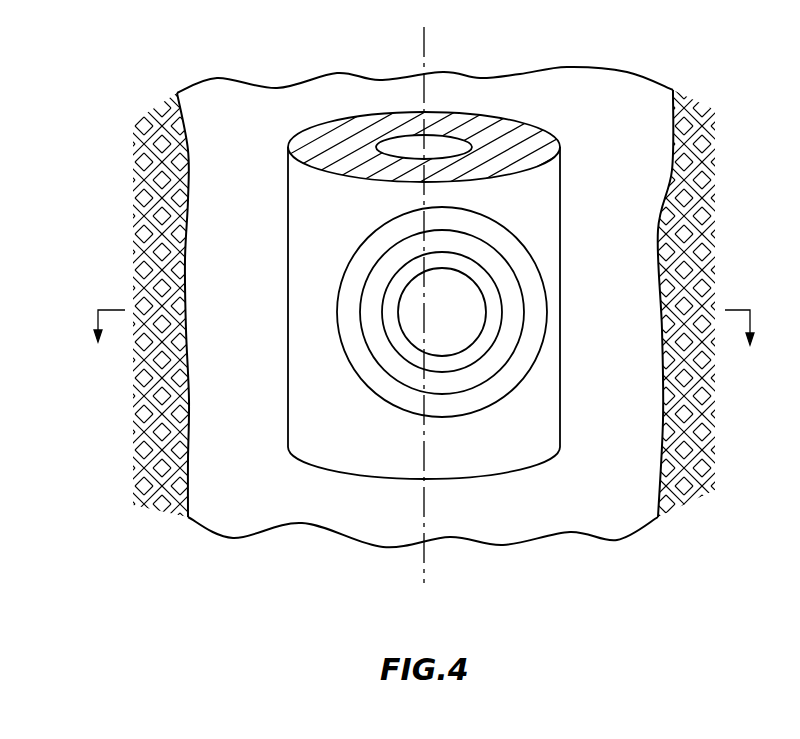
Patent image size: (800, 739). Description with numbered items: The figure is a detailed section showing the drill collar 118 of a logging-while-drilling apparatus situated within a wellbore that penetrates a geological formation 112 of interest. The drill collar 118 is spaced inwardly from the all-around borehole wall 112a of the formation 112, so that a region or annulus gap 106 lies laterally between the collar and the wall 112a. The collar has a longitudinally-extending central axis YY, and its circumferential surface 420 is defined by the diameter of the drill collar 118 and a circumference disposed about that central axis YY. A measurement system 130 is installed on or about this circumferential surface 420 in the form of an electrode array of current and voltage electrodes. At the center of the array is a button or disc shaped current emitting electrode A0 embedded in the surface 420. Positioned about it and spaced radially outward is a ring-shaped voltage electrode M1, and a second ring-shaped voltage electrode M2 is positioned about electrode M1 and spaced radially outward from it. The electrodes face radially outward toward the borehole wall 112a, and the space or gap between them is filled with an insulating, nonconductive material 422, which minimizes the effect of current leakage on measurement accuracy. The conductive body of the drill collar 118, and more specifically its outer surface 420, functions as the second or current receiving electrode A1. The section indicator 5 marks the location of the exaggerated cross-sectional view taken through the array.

The geological formation 112 is at (107, 256).
The all-around wall of the formation 112a is at (168, 120).
The region or annulus gap 106 is at (252, 288).
The drill collar 118 is at (560, 195).
The insulating, nonconductive material 422 is at (497, 355).
The circumferential surface 420 is at (503, 453).
The measurement system 130 is at (455, 440).
The section view indicator 5 is at (424, 342).
The central axis YY is at (425, 53).
The current emitting electrode A0 is at (437, 290).
The current receiving electrode A1 is at (350, 350).
The ring-shaped voltage electrode M1 is at (395, 275).
The second ring-shaped voltage electrode M2 is at (402, 380).